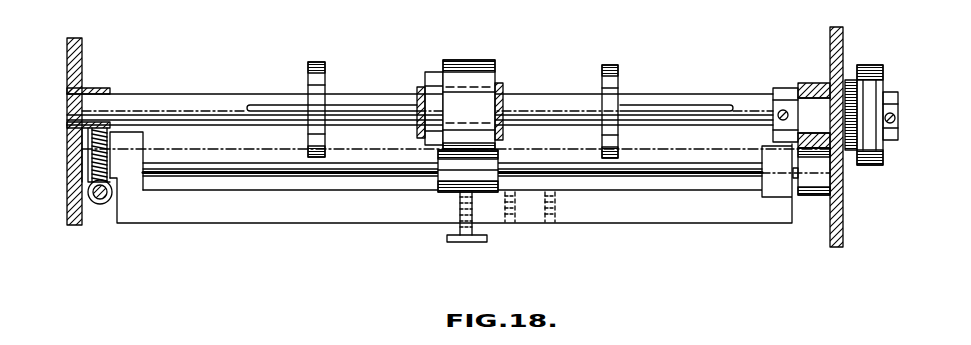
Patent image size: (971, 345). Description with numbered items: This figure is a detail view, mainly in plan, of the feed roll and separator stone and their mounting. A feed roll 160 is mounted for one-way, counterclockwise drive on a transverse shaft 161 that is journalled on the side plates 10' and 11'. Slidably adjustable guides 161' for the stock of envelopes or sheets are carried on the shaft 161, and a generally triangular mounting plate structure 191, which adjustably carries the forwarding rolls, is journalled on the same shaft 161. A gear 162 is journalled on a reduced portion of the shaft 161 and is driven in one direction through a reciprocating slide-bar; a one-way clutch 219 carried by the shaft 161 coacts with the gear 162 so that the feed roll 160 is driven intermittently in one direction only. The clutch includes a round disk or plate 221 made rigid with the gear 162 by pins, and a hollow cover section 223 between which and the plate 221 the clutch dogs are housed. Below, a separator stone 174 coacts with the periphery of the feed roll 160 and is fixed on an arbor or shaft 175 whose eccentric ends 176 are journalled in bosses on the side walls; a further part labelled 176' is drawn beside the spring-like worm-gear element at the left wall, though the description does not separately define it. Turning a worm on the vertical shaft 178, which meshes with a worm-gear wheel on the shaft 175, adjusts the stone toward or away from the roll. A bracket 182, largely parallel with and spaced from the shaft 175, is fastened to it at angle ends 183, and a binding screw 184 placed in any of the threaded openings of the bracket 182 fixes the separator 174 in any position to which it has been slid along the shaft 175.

The side plate 10' is at (860, 137).
The side plate 11' is at (55, 131).
The feed roll 160 is at (482, 117).
The transverse shaft 161 is at (420, 95).
The guides 161' is at (591, 99).
The gear 162 is at (848, 155).
The separator stone 174 is at (485, 183).
The arbor or shaft 175 is at (183, 172).
The eccentric ends 176 is at (63, 144).
The spring bracket 176' is at (62, 152).
The vertical shaft 178 is at (102, 201).
The bracket 182 is at (352, 222).
The angle ends 183 is at (130, 145).
The binding screw 184 is at (475, 243).
The mounting plate structure 191 is at (500, 86).
The one-way clutch 219 is at (889, 72).
The disk or plate 221 is at (859, 80).
The cover section 223 is at (875, 148).